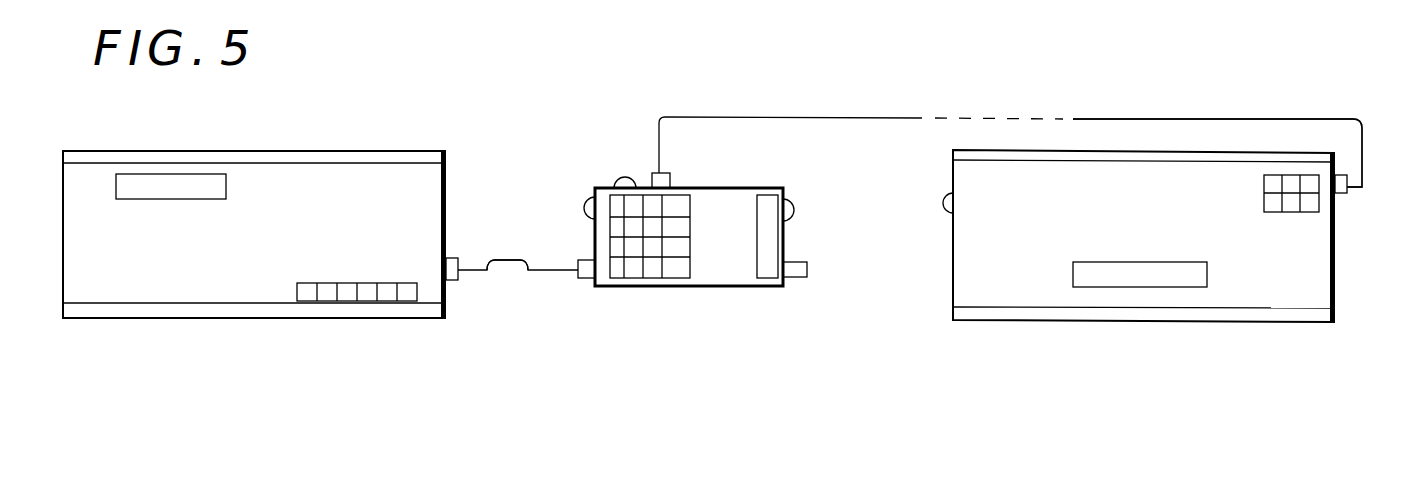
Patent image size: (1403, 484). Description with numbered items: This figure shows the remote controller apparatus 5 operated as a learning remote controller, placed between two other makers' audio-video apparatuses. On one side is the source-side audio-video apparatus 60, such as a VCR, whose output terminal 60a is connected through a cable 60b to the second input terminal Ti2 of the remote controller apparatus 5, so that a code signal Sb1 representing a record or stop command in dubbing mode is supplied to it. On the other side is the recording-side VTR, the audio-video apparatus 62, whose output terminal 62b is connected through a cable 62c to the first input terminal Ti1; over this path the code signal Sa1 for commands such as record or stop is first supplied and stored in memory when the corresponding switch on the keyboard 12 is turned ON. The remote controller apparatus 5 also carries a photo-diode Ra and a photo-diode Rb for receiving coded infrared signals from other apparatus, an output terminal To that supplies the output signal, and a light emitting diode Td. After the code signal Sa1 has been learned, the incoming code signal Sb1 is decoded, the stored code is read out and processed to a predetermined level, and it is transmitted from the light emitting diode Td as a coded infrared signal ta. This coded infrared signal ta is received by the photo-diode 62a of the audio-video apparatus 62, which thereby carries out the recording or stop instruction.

The remote controller apparatus 5 is at (736, 179).
The keyboard 12 is at (699, 255).
The other maker's audio-video apparatus 60 is at (338, 145).
The output terminal 60a is at (457, 282).
The cable 60b is at (533, 276).
The other maker's audio-video apparatus 62 is at (1134, 326).
The photo-diode 62a is at (943, 213).
The output terminal 62b is at (1343, 193).
The cable 62c is at (1293, 119).
The photo-diode Ra is at (624, 177).
The photo-diode Rb is at (583, 200).
The light emitting diode Td is at (793, 200).
The first input terminal Ti1 is at (671, 174).
The second input terminal Ti2 is at (587, 279).
The output terminal To is at (788, 278).
The code signal Sa1 is at (1010, 138).
The code signal Sb1 is at (512, 249).
The coded infrared signal ta is at (886, 201).
The ON operation ON is at (673, 305).